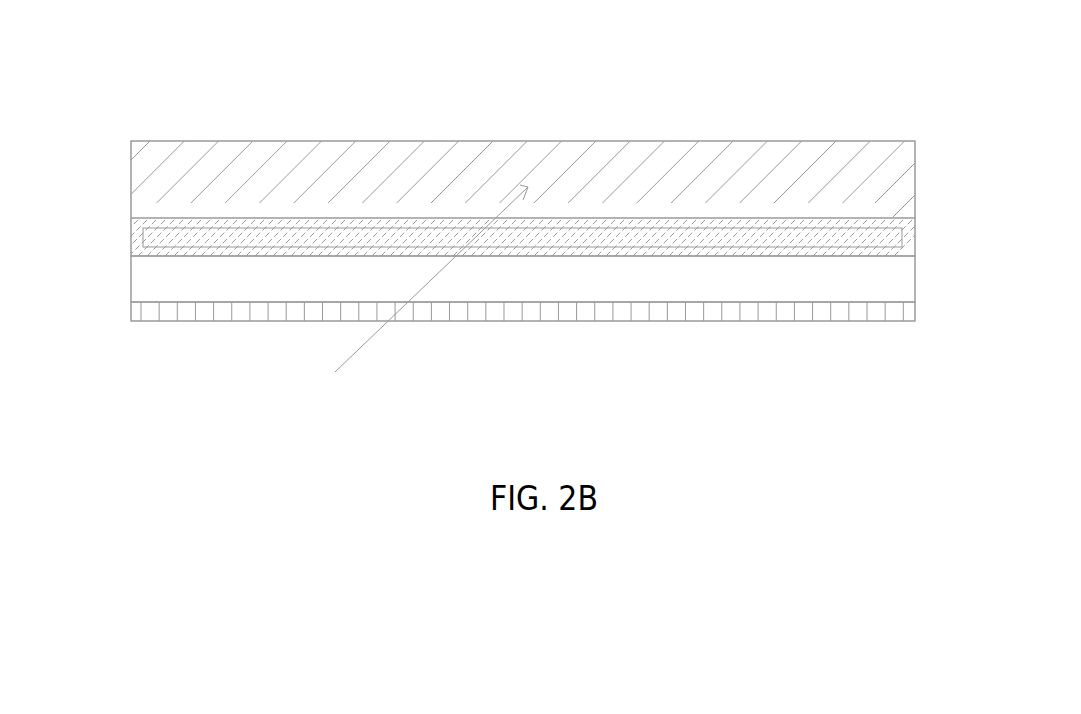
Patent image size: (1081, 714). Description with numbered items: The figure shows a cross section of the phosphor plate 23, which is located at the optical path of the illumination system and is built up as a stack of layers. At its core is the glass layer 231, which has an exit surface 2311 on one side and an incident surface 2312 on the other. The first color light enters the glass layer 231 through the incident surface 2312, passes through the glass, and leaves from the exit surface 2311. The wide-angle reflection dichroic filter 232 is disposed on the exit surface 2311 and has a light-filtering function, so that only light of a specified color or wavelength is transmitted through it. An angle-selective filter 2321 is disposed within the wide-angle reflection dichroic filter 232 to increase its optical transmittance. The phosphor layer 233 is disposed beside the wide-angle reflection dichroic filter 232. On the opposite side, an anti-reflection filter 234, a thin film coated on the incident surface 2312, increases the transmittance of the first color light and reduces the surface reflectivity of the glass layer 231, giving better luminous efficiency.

The phosphor plate 23 is at (820, 47).
The glass layer 231 is at (905, 275).
The exit surface 2311 is at (890, 256).
The incident surface 2312 is at (895, 302).
The wide-angle reflection dichroic filter 232 is at (893, 225).
The angle-selective filter 2321 is at (900, 233).
The phosphor layer 233 is at (880, 145).
The anti-reflection filter 234 is at (897, 315).